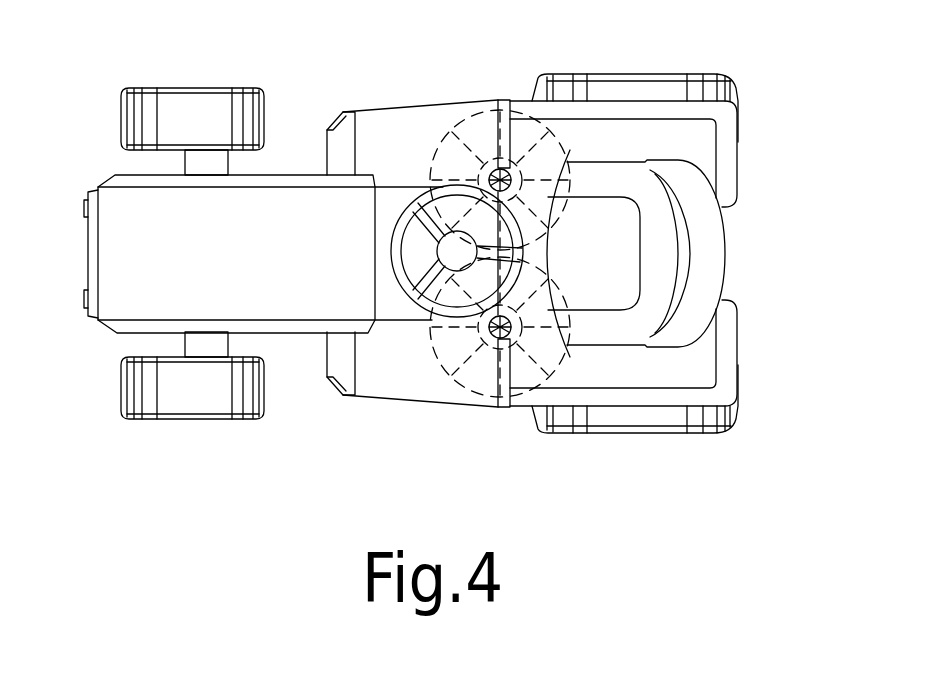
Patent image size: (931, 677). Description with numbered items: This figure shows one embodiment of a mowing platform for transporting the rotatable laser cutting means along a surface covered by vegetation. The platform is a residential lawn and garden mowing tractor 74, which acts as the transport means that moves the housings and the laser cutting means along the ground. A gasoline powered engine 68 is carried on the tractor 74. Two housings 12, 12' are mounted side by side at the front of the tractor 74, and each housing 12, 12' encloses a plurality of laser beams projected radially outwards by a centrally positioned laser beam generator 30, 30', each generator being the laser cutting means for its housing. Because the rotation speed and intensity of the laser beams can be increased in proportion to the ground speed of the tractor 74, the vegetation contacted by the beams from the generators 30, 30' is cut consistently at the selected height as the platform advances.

The mowing housing 12 is at (509, 94).
The housing 12' is at (511, 411).
The laser cutting means 30 is at (488, 135).
The laser beam generator 30' is at (476, 357).
The gasoline powered engine 68 is at (280, 200).
The lawn and garden tractor 74 is at (767, 143).